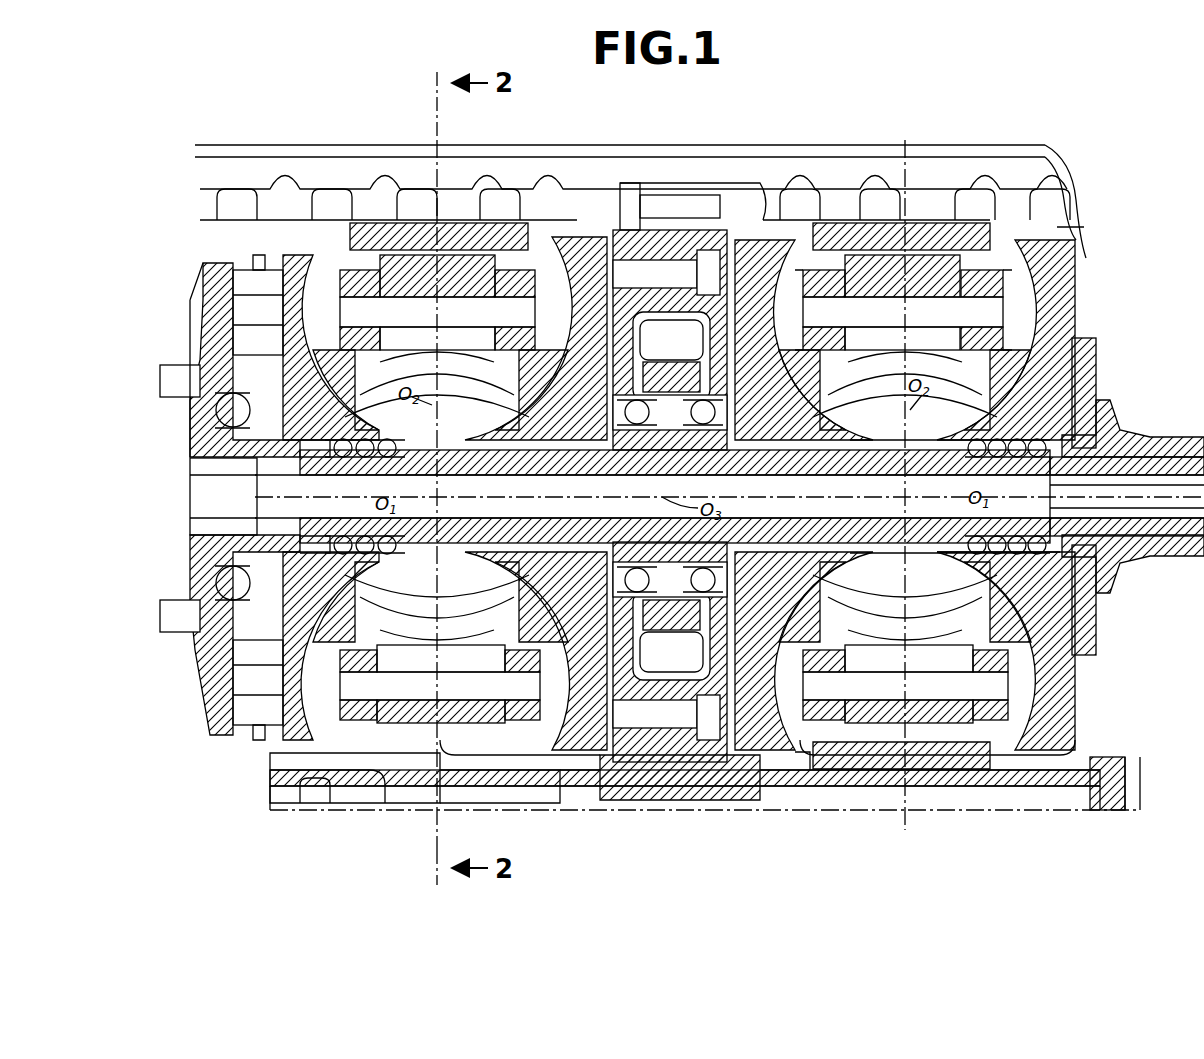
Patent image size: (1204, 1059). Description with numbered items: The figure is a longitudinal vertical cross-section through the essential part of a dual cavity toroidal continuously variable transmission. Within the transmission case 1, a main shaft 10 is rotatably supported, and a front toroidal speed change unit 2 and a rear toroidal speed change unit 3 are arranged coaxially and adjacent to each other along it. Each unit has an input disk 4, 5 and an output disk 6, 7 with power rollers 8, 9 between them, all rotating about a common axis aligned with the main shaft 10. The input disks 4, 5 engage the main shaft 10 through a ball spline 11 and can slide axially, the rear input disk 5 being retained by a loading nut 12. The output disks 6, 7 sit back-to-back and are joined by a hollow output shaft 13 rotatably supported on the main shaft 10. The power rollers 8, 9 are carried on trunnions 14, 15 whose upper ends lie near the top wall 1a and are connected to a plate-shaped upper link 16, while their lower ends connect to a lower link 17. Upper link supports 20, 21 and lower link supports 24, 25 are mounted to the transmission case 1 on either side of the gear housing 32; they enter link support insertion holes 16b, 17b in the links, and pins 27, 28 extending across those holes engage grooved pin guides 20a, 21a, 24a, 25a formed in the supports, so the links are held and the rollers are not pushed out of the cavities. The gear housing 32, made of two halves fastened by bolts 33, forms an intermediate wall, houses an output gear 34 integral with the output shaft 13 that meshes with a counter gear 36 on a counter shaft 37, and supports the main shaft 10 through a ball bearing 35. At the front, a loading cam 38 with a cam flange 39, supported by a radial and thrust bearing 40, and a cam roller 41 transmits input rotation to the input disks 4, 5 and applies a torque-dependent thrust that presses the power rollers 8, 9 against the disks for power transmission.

The transmission case 1 is at (637, 160).
The top wall 1a is at (752, 192).
The front toroidal speed change unit 2 is at (325, 275).
The rear toroidal speed change unit 3 is at (1012, 255).
The input disk 4 is at (292, 255).
The input disk 5 is at (1062, 272).
The output disk 6 is at (590, 250).
The output disk 7 is at (790, 275).
The power roller 8 is at (352, 750).
The power roller 9 is at (915, 695).
The main shaft 10 is at (200, 555).
The ball spline 11 is at (1005, 456).
The loading nut 12 is at (1110, 412).
The hollow output shaft 13 is at (720, 452).
The trunnion 14 is at (260, 650).
The trunnion 15 is at (1040, 640).
The upper link 16 is at (830, 290).
The link support insertion hole 16b is at (980, 262).
The lower link 17 is at (790, 730).
The link support insertion hole 17b is at (860, 705).
The upper link support 20 is at (405, 250).
The pin guide 20a is at (470, 268).
The upper link support 21 is at (930, 262).
The pin guide 21a is at (880, 300).
The lower link support 24 is at (458, 740).
The pin guide 24a is at (432, 690).
The lower link support 25 is at (968, 705).
The pin guide 25a is at (815, 705).
The pin 27 is at (820, 452).
The pin 28 is at (935, 705).
The gear housing 32 is at (690, 240).
The fastening bolt 33 is at (660, 228).
The output gear 34 is at (705, 760).
The ball bearing 35 is at (637, 740).
The counter gear 36 is at (680, 690).
The counter shaft 37 is at (1102, 755).
The loading cam 38 is at (205, 272).
The cam flange 39 is at (215, 318).
The radial and thrust bearing 40 is at (215, 405).
The cam roller 41 is at (245, 270).